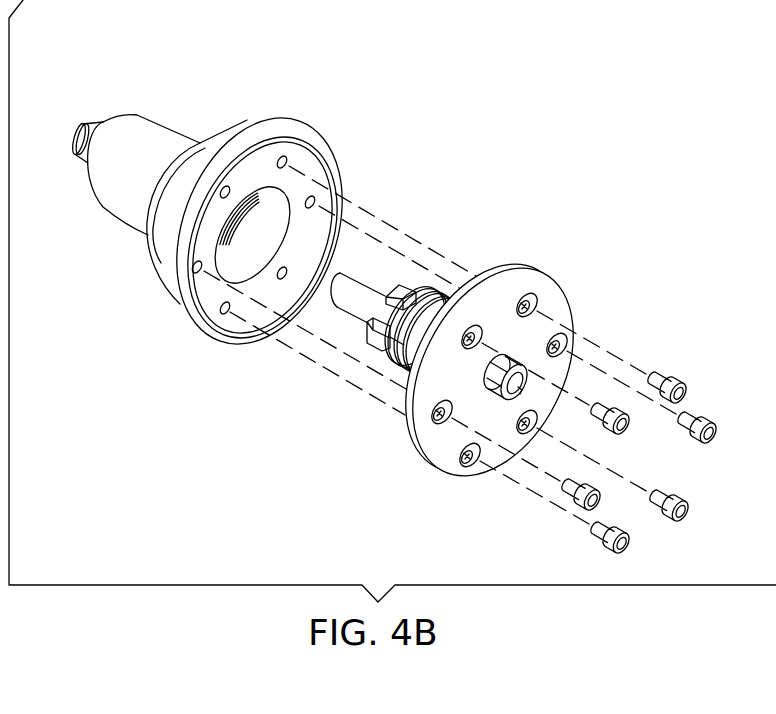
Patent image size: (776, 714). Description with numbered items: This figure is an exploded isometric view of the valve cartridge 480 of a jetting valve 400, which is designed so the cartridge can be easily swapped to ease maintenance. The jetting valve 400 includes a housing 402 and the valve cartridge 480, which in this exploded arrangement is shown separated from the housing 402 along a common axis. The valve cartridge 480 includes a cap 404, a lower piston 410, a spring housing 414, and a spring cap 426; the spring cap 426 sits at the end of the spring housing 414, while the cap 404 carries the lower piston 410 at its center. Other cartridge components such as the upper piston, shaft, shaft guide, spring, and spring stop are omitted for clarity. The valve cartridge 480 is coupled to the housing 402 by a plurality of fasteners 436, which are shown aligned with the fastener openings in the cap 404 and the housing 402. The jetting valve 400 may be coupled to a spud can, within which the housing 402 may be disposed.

The jetting valve 400 is at (514, 94).
The housing 402 is at (176, 130).
The spring housing 414 is at (375, 282).
The spring cap 426 is at (368, 288).
The valve cartridge 480 is at (563, 242).
The cap 404 is at (559, 308).
The lower piston 410 is at (478, 474).
The fastener 436 is at (682, 491).